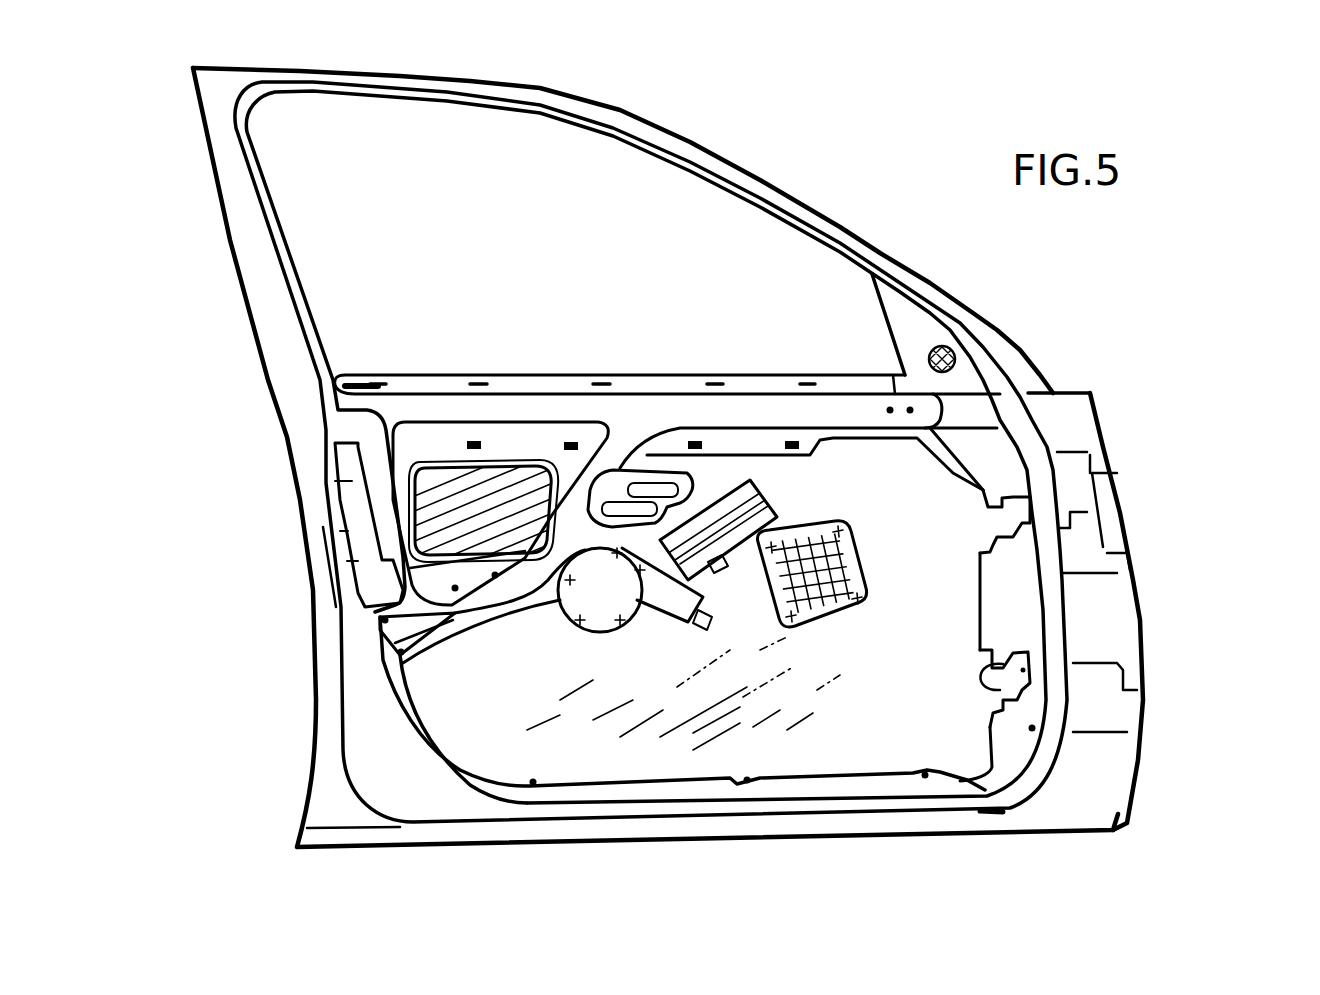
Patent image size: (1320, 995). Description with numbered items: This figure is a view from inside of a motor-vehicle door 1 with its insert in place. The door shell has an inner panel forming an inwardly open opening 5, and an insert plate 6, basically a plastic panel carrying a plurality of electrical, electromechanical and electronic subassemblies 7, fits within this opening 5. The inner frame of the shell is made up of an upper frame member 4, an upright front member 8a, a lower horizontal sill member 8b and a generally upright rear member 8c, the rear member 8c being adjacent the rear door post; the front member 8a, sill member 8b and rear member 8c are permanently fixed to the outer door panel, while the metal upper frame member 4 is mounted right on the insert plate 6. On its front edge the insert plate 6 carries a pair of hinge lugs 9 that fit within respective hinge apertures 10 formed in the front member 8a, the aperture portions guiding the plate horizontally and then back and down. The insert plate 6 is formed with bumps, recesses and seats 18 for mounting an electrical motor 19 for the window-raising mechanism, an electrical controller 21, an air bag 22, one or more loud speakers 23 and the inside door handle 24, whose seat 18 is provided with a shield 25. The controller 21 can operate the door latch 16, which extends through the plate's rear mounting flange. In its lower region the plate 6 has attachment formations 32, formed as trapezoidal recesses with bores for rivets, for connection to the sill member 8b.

The motor-vehicle door 1 is at (190, 349).
The upper frame member 4 is at (687, 415).
The opening 5 is at (417, 708).
The insert plate 6 is at (507, 740).
The subassemblies 7 is at (582, 542).
The upright front member 8a is at (1032, 728).
The lower horizontal sill member 8b is at (680, 790).
The rear member 8c is at (390, 678).
The hinge lugs 9 is at (993, 650).
The hinge apertures 10 is at (1025, 670).
The latch 16 is at (352, 498).
The seats 18 is at (455, 462).
The electrical motor 19 is at (600, 634).
The electrical controller 21 is at (740, 505).
The air bag 22 is at (428, 470).
The loud speakers 23 is at (868, 515).
The inside door handle 24 is at (640, 507).
The shield 25 is at (617, 478).
The attachment formations 32 is at (922, 778).